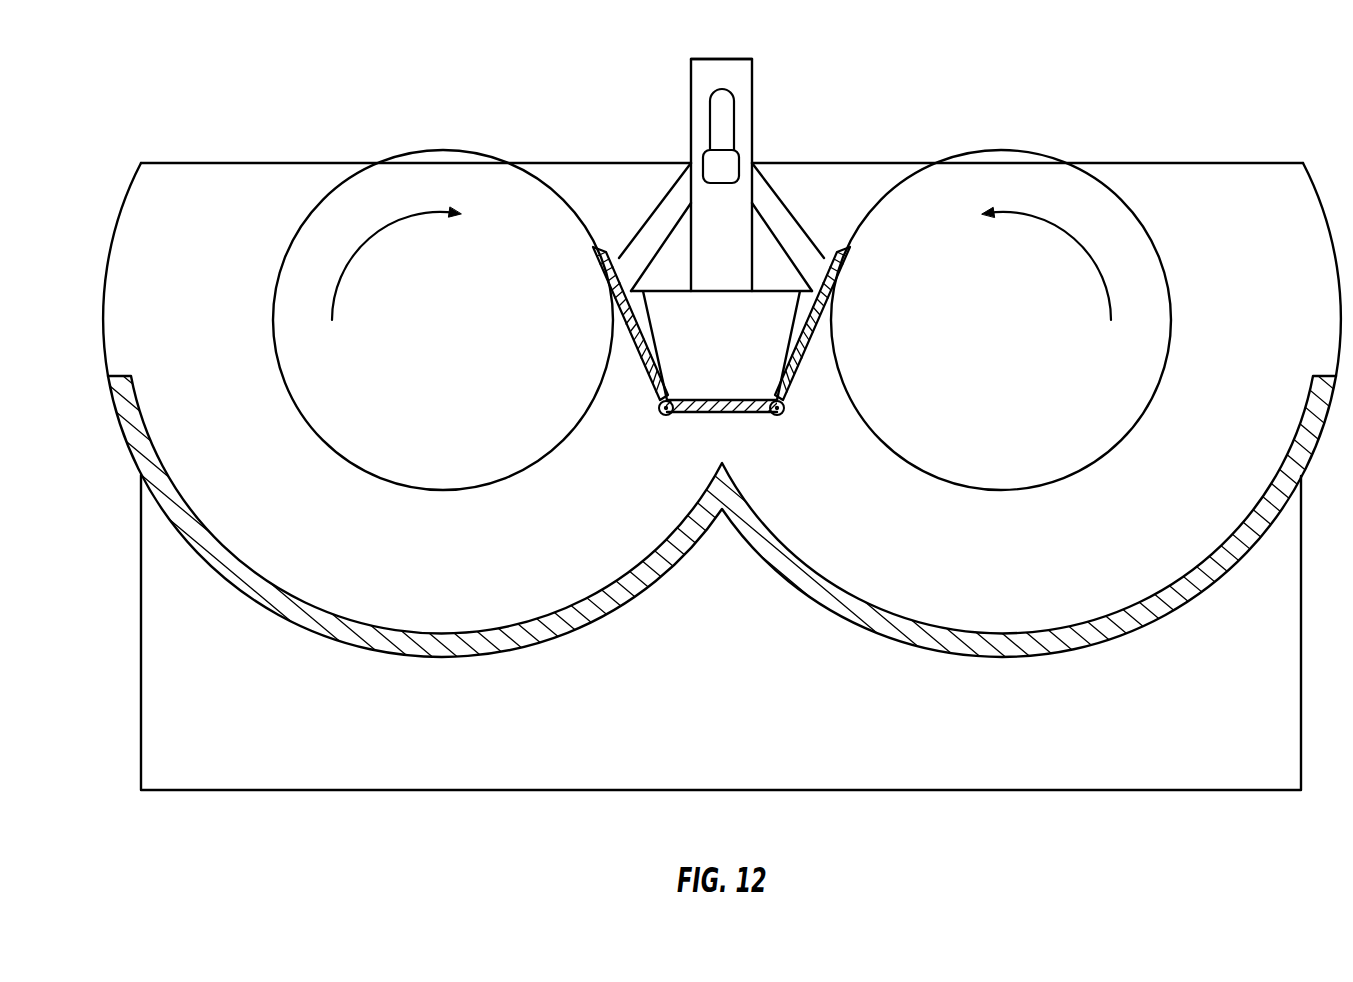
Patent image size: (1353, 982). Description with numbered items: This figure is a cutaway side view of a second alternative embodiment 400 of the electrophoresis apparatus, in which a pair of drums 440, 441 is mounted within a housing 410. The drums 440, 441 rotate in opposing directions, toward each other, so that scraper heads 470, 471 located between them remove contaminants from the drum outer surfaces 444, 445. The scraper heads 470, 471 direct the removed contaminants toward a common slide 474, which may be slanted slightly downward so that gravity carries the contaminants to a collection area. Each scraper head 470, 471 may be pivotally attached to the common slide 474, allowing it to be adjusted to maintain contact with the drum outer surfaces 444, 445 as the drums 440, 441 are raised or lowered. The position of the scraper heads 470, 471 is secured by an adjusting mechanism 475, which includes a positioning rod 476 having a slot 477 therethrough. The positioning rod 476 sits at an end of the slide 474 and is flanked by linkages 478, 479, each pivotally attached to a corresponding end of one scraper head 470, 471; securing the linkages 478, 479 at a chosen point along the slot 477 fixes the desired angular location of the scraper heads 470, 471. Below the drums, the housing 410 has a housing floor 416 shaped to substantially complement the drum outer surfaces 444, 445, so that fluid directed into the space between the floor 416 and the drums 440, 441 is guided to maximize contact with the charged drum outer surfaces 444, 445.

The second alternative embodiment 400 is at (129, 74).
The housing 410 is at (137, 428).
The housing floor 416 is at (1147, 601).
The drum 440 is at (1019, 182).
The drum 441 is at (425, 182).
The drum outer surface 444 is at (1172, 319).
The drum outer surface 445 is at (271, 319).
The scraper head 470 is at (842, 245).
The scraper head 471 is at (602, 245).
The common slide 474 is at (744, 359).
The adjusting mechanism 475 is at (723, 58).
The positioning rod 476 is at (705, 81).
The slot 477 is at (722, 118).
The linkage 478 is at (763, 195).
The linkage 479 is at (680, 195).